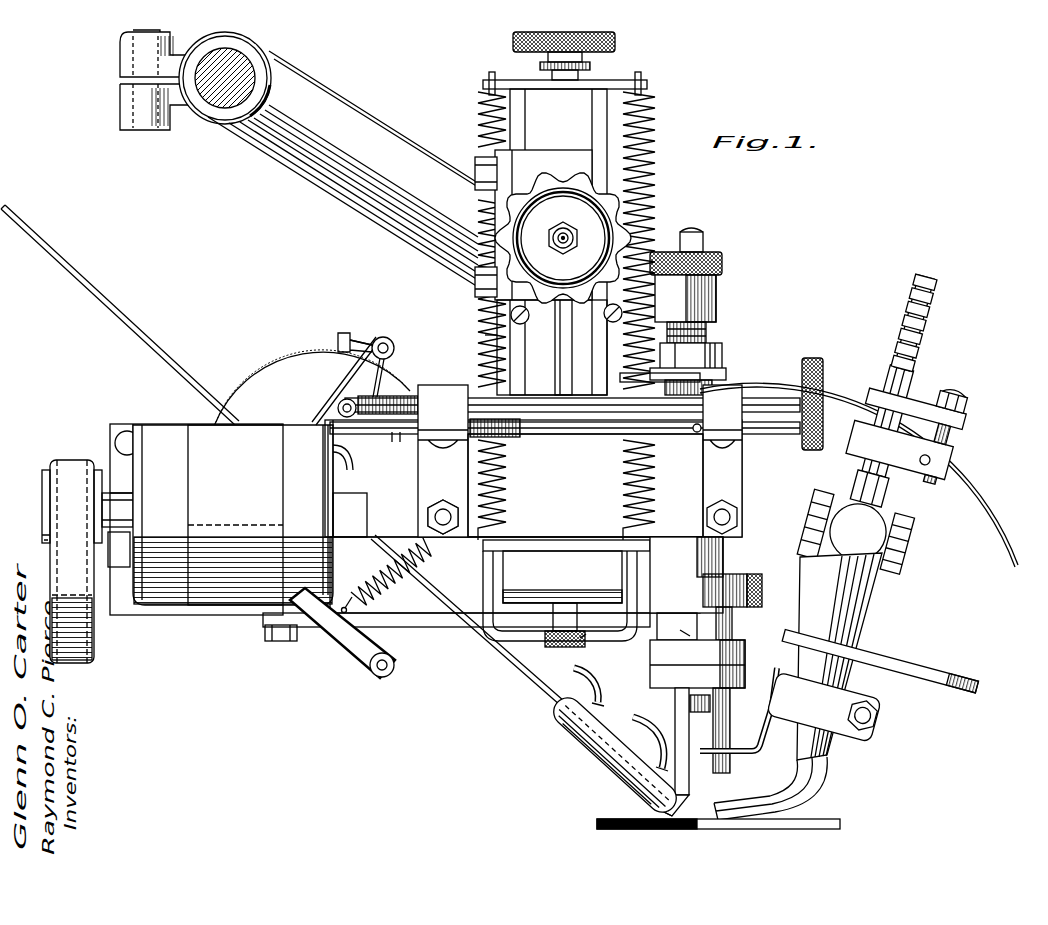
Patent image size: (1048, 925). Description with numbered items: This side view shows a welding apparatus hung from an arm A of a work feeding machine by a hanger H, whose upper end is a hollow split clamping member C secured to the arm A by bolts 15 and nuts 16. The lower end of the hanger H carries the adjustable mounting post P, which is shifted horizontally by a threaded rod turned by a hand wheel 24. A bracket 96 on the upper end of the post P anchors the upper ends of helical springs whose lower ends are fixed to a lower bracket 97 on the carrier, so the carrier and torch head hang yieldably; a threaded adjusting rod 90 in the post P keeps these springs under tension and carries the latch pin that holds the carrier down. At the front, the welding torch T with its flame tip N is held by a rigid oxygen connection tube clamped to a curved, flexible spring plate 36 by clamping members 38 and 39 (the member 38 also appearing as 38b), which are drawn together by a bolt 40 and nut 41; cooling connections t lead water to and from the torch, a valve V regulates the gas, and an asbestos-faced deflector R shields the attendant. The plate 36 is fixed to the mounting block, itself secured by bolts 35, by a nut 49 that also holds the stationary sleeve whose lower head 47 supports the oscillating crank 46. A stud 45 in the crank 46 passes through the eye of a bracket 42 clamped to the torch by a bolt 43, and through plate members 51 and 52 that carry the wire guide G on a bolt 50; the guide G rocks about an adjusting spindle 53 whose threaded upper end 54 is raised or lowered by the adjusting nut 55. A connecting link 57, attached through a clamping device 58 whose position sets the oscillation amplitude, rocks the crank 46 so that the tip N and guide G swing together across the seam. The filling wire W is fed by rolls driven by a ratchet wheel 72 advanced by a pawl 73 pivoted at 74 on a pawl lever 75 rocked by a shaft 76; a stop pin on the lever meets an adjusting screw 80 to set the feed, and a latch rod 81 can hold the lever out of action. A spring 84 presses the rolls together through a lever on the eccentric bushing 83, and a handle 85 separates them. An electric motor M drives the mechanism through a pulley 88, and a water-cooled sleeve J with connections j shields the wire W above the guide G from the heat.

The bolts 15 is at (128, 33).
The nuts 16 is at (122, 49).
The arm A is at (247, 63).
The clamping member C is at (209, 120).
The hanger H is at (355, 118).
The adjusting rod 90 is at (575, 78).
The bracket 96 is at (626, 90).
The mounting post P is at (558, 242).
The bolts 35 is at (478, 130).
The hand wheel 24 is at (541, 188).
The reduced threaded portion 54 is at (690, 236).
The adjusting nut 55 is at (720, 263).
The nut 49 is at (720, 346).
The pulley 88 is at (44, 510).
The electric motor M is at (233, 515).
The connecting link 57 is at (427, 623).
The pawl lever operating shaft 76 is at (348, 452).
The ratchet wheel 72 is at (307, 354).
The pawl lever 75 is at (353, 382).
The pivot 74 is at (395, 350).
The pawl 73 is at (342, 341).
The latch rod 81 is at (585, 434).
The adjusting screw 80 is at (568, 412).
The spring supporting plate 36 is at (982, 493).
The lower bracket 97 is at (545, 545).
The clamping member 38 is at (580, 638).
The head 47 is at (675, 613).
The oscillating crank 46 is at (730, 578).
The clamping device 58 is at (762, 581).
The oscillating stud 45 is at (733, 619).
The upper plate member 51 is at (740, 649).
The lower plate member 52 is at (738, 669).
The adjusting spindle 53 is at (680, 630).
The bolt 50 is at (693, 704).
The wire guide G is at (683, 768).
The bracket 42 is at (763, 727).
The spring 84 is at (388, 588).
The bushing 83 is at (346, 643).
The handle 85 is at (387, 665).
The filling material W is at (500, 653).
The tube J is at (607, 731).
The connections j is at (600, 684).
The clamping member 39 is at (967, 441).
The clamp plate 38b is at (940, 466).
The nut 41 is at (967, 417).
The bolt 40 is at (957, 401).
The valve V is at (873, 523).
The connections t is at (805, 508).
The welding torch T is at (857, 618).
The flame deflector R is at (902, 664).
The bolt 43 is at (863, 711).
The flame tip N is at (753, 793).